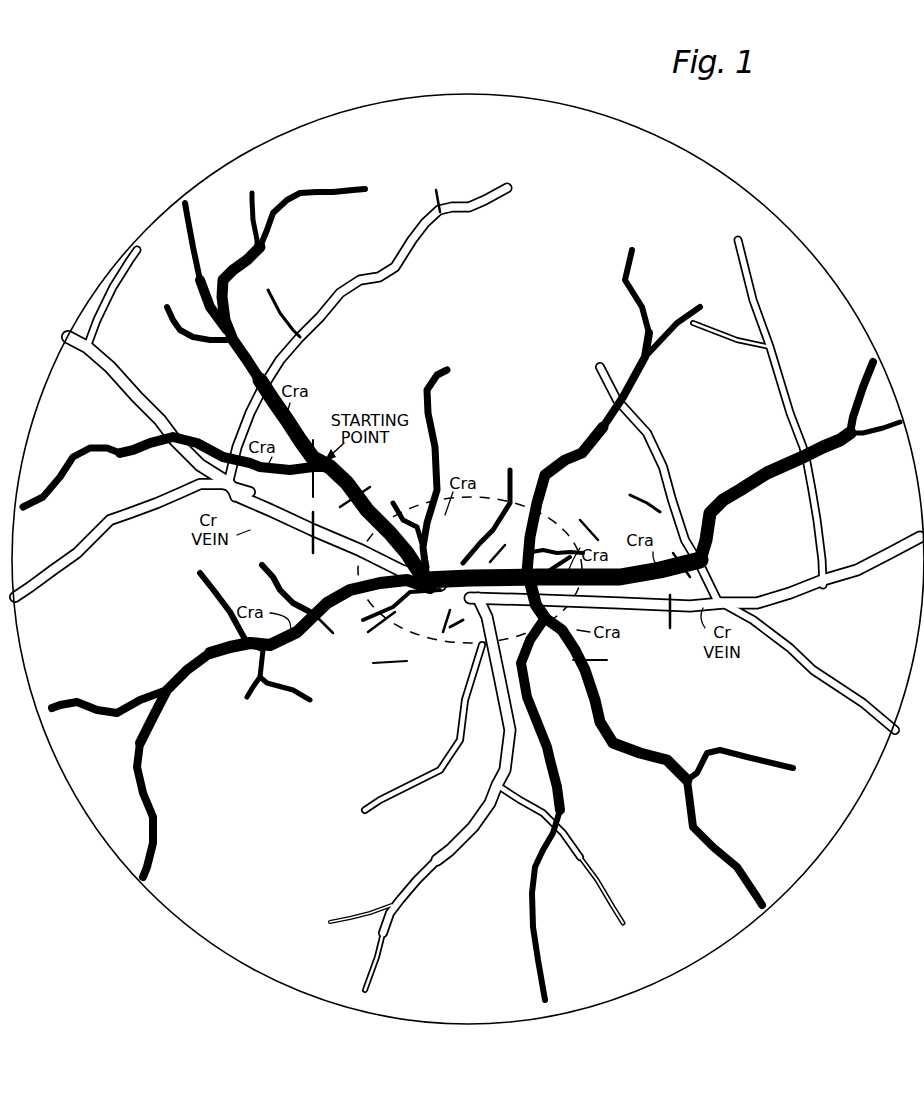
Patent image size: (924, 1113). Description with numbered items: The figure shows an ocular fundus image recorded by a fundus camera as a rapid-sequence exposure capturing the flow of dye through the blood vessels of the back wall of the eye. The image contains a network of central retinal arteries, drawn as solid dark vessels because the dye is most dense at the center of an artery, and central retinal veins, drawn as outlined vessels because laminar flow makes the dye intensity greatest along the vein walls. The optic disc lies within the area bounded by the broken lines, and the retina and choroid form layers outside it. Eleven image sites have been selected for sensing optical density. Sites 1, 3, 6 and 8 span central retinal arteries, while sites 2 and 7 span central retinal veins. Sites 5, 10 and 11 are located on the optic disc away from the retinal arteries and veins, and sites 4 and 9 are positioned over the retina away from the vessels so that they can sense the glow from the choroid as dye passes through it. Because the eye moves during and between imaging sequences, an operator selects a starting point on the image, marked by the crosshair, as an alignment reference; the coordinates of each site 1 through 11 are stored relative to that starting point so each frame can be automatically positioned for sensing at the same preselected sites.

The image site 1 is at (357, 484).
The image site 2 is at (302, 538).
The image site 3 is at (329, 631).
The image site 4 is at (390, 676).
The image site 5 is at (438, 623).
The image site 6 is at (598, 664).
The image site 7 is at (671, 624).
The image site 8 is at (678, 554).
The image site 9 is at (593, 525).
The image site 10 is at (508, 543).
The image site 11 is at (387, 617).